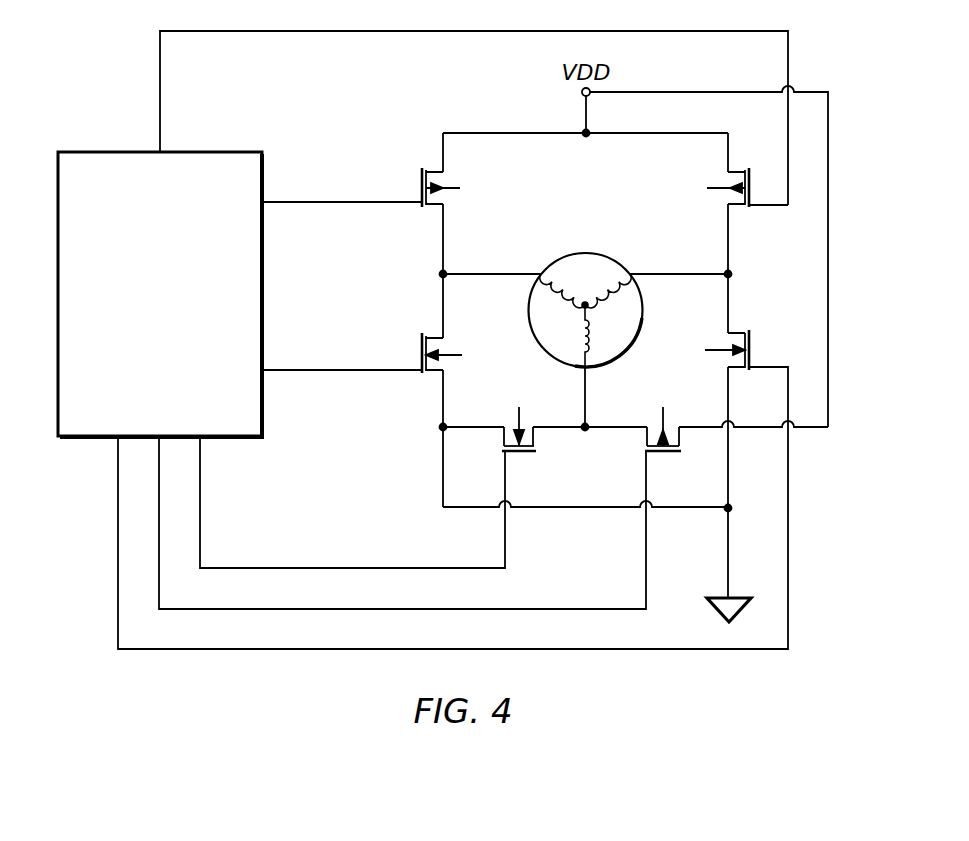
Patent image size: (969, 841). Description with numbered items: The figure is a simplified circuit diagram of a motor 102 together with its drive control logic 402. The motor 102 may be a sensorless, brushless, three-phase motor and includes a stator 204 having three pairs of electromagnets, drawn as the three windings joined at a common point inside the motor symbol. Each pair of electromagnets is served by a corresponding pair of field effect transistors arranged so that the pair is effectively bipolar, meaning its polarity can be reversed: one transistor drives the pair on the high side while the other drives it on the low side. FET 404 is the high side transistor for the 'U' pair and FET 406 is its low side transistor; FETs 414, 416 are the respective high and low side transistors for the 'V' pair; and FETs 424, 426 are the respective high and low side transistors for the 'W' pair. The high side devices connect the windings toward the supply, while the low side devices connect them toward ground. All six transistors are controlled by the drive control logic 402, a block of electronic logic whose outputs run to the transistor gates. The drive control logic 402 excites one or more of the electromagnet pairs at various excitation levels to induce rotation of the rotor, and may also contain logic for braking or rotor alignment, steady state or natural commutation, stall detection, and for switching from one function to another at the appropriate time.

The motor 102 is at (622, 258).
The stator 204 is at (569, 255).
The drive control logic 402 is at (160, 294).
The FET 404 is at (460, 188).
The FET 406 is at (462, 355).
The FET 414 is at (707, 188).
The FET 416 is at (705, 350).
The FET 424 is at (666, 451).
The FET 426 is at (527, 451).